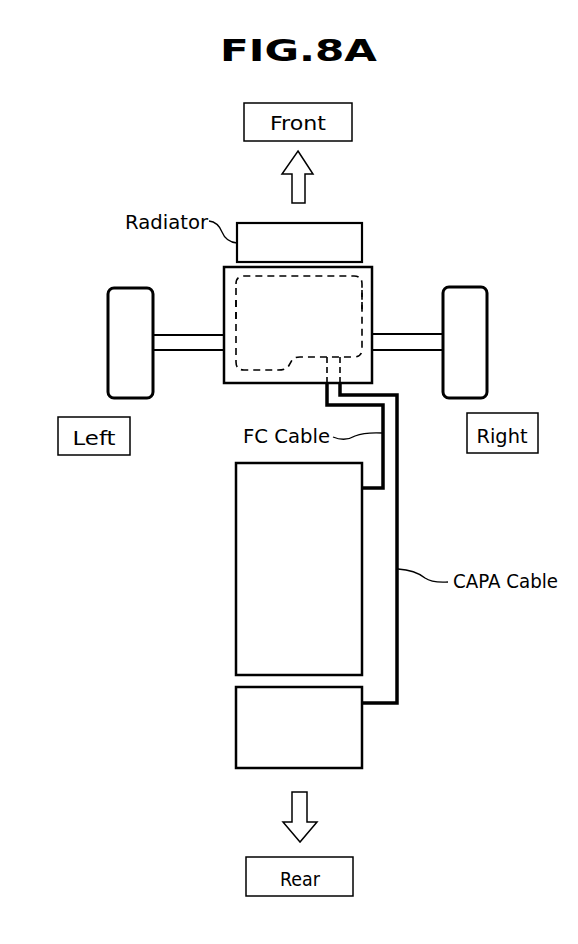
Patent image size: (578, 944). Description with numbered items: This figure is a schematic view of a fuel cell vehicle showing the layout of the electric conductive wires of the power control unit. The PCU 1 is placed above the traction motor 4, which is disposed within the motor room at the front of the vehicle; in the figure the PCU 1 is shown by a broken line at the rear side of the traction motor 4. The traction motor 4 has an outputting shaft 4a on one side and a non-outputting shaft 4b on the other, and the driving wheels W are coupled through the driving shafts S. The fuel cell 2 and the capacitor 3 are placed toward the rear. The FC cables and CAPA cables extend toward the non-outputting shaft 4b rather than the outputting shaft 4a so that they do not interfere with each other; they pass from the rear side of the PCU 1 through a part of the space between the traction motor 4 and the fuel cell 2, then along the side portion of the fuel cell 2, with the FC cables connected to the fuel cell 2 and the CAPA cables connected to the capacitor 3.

The PCU (Power Control Unit) 1 is at (342, 266).
The fuel cell 2 is at (240, 568).
The capacitor 3 is at (240, 726).
The traction motor 4 is at (276, 373).
The outputting shaft 4a is at (236, 313).
The non-outputting shaft 4b is at (365, 296).
The driving wheel W is at (109, 332).
The driving shaft S is at (413, 350).